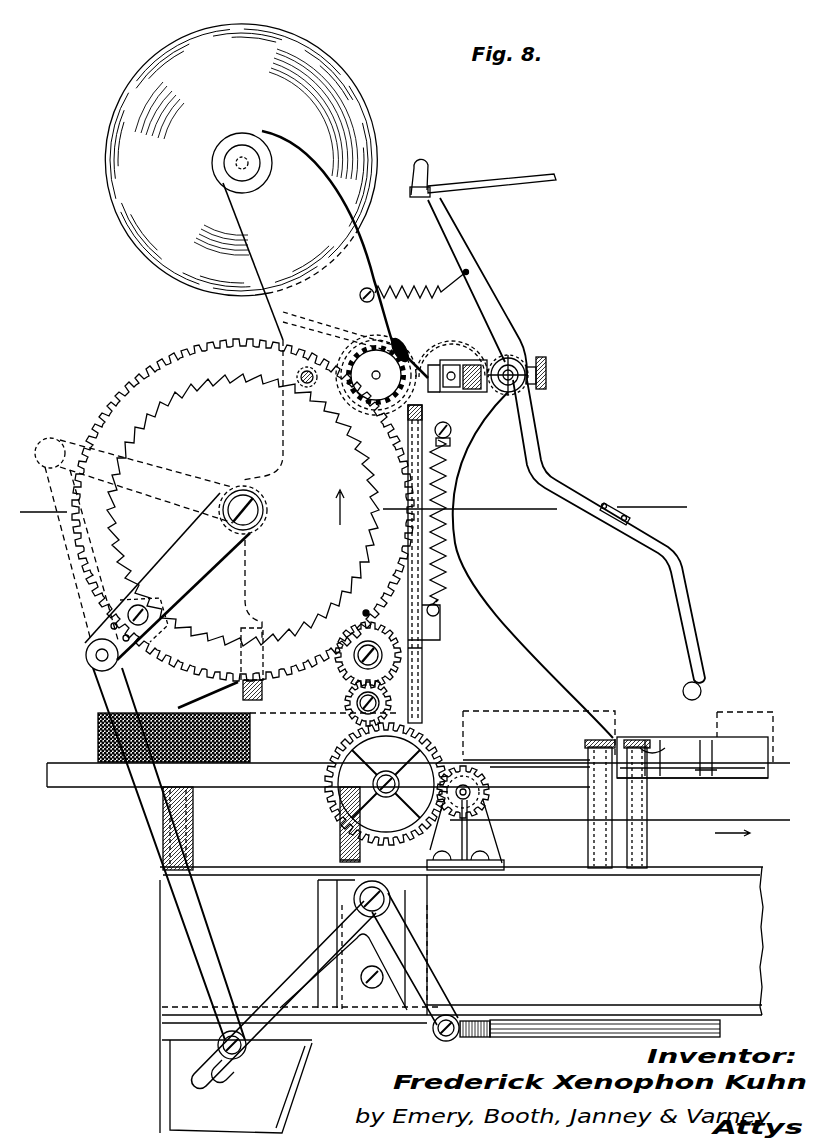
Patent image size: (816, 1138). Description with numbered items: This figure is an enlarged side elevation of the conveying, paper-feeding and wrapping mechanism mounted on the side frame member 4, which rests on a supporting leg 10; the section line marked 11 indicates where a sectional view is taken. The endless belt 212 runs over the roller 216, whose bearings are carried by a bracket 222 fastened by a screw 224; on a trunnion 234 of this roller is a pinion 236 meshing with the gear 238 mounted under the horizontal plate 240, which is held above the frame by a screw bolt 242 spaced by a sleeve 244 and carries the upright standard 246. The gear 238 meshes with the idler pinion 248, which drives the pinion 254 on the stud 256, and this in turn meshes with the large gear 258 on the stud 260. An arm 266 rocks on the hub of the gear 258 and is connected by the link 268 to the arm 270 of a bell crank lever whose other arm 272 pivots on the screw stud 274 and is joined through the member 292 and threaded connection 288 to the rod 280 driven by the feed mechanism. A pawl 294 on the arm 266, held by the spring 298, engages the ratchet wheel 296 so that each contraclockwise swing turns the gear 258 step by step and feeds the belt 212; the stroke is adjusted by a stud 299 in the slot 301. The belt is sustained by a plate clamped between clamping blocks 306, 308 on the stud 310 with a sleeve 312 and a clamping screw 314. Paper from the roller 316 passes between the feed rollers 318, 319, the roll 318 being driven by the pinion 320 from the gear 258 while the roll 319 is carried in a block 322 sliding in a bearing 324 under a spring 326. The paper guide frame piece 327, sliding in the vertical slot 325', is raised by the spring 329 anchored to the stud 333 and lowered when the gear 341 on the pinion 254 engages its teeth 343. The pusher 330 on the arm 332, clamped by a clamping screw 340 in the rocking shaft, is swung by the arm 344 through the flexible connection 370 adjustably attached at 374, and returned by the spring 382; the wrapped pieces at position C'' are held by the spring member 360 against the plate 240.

The side frame member 4 is at (748, 959).
The supporting leg 10 is at (160, 1093).
The section line 11 is at (366, 498).
The endless belt 212 is at (558, 820).
The roller 216 is at (495, 793).
The bracket 222 is at (495, 840).
The screw 224 is at (482, 870).
The trunnion 234 is at (500, 768).
The pinion 236 is at (470, 770).
The gear 238 is at (335, 757).
The horizontal plate 240 is at (95, 778).
The screw bolt 242 is at (175, 782).
The sleeve 244 is at (193, 828).
The standard 246 is at (363, 255).
The idler pinion 248 is at (350, 700).
The pinion 254 is at (422, 648).
The stud 256 is at (387, 660).
The gear 258 is at (122, 400).
The stud 260 is at (240, 488).
The arm 266 is at (195, 582).
The link 268 is at (183, 934).
The bell crank lever arm 270 is at (280, 975).
The bell crank lever arm 272 is at (433, 982).
The screw stud 274 is at (354, 905).
The rod 280 is at (640, 1037).
The screw-threaded connection 288 is at (495, 1037).
The member 292 is at (452, 1041).
The pawl 294 is at (165, 630).
The ratchet wheel 296 is at (235, 386).
The spring 298 is at (119, 660).
The stud 299 is at (238, 1058).
The slot 301 is at (215, 1085).
The clamping block 306 is at (713, 703).
The clamping block 308 is at (675, 777).
The stud 310 is at (646, 742).
The sleeve 312 is at (647, 807).
The clamping screw 314 is at (712, 716).
The roller 316 is at (238, 168).
The feed roller 318 is at (401, 336).
The feed roller 319 is at (447, 345).
The pinion 320 is at (350, 360).
The block 322 is at (447, 352).
The bearing 324 is at (495, 397).
The vertical slot 325' is at (442, 653).
The spring 326 is at (517, 361).
The frame piece 327 is at (425, 634).
The spring 329 is at (445, 478).
The pusher plate 330 is at (686, 686).
The arm 332 is at (548, 484).
The stud 333 is at (452, 432).
The clamping screw 340 is at (548, 362).
The gear 341 is at (336, 655).
The teeth 343 is at (400, 608).
The arm 344 is at (470, 255).
The spring member 360 is at (208, 694).
The flexible connection 370 is at (520, 178).
The adjustable connection 374 is at (430, 183).
The spring 382 is at (400, 285).
The wrapped piece position C'' is at (159, 728).